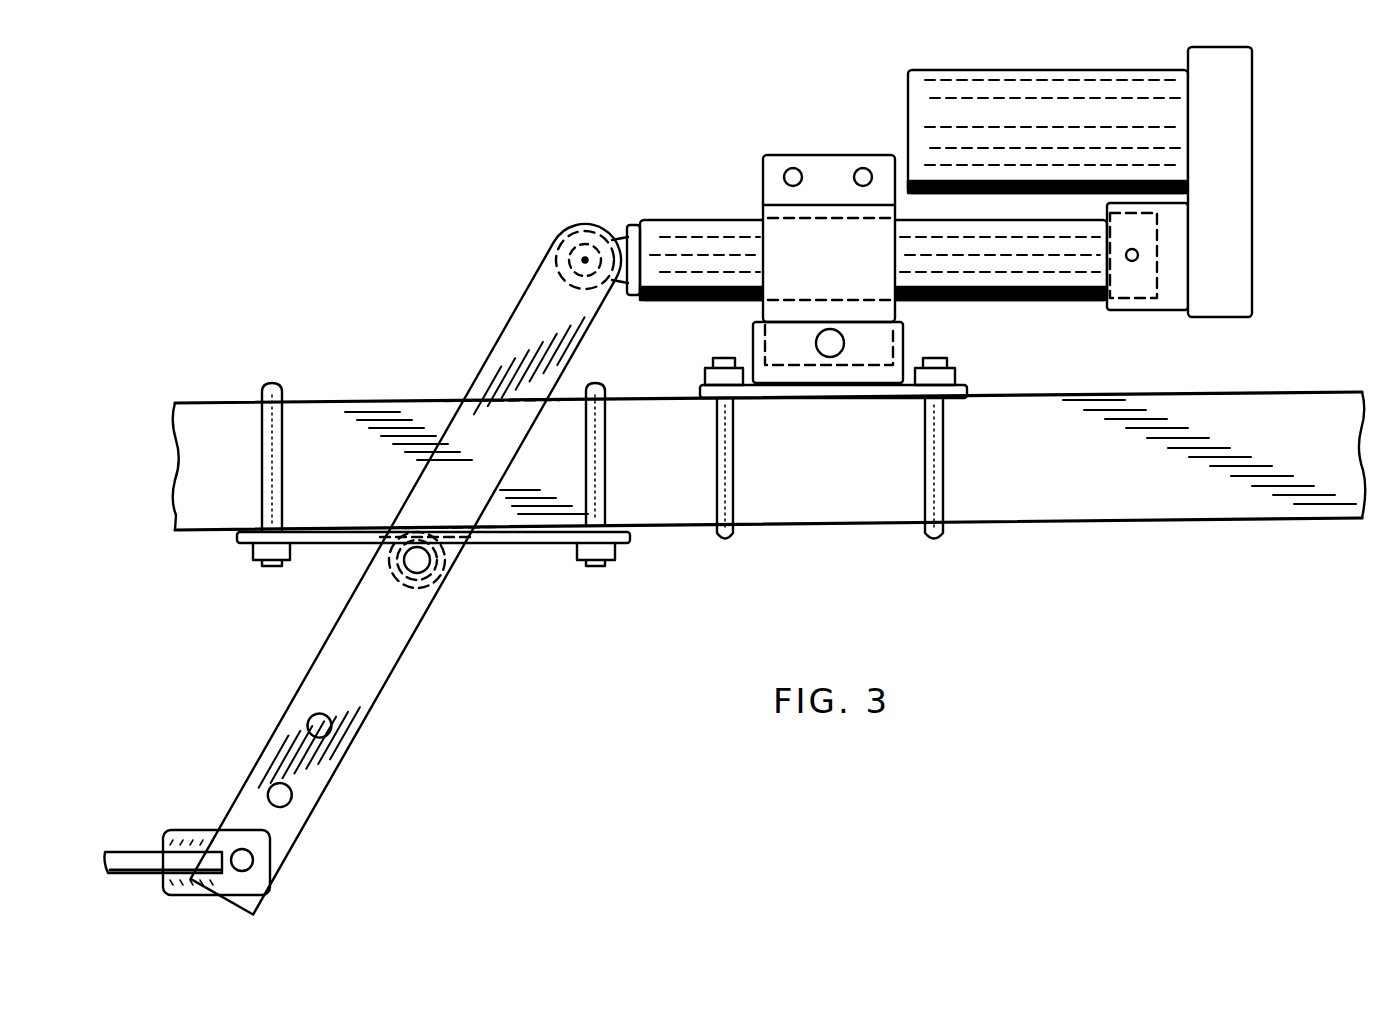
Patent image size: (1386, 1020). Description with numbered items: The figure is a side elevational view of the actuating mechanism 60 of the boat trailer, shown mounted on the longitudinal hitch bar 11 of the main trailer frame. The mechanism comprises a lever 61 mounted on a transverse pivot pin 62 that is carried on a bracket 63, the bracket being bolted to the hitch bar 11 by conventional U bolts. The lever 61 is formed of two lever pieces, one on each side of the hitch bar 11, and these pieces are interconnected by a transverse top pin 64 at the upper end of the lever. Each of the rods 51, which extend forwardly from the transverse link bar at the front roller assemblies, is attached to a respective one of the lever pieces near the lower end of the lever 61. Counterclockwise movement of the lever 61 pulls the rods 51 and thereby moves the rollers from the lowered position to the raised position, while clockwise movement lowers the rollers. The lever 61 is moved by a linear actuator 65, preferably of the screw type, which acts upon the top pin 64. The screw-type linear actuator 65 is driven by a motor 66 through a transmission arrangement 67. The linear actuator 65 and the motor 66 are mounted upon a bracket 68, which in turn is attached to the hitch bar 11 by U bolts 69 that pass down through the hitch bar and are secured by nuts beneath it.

The hitch bar 11 is at (216, 404).
The rods 51 is at (134, 852).
The actuating mechanism 60 is at (601, 192).
The lever 61 is at (378, 648).
The transverse pivot pin 62 is at (419, 563).
The bracket 63 is at (358, 526).
The transverse top pin 64 is at (565, 242).
The linear actuator 65 is at (712, 215).
The motor 66 is at (996, 90).
The transmission arrangement 67 is at (1237, 140).
The bracket 68 is at (822, 160).
The U bolts 69 is at (735, 486).